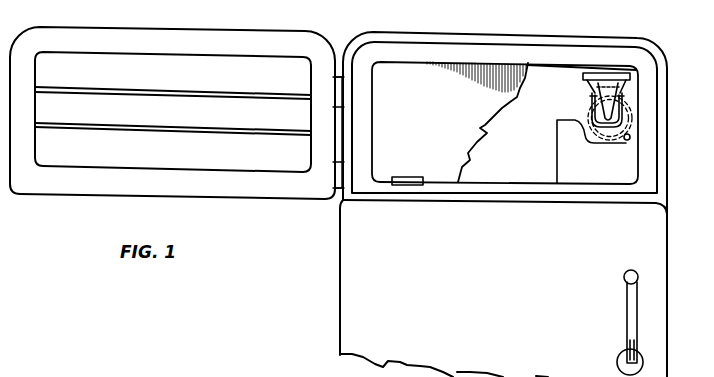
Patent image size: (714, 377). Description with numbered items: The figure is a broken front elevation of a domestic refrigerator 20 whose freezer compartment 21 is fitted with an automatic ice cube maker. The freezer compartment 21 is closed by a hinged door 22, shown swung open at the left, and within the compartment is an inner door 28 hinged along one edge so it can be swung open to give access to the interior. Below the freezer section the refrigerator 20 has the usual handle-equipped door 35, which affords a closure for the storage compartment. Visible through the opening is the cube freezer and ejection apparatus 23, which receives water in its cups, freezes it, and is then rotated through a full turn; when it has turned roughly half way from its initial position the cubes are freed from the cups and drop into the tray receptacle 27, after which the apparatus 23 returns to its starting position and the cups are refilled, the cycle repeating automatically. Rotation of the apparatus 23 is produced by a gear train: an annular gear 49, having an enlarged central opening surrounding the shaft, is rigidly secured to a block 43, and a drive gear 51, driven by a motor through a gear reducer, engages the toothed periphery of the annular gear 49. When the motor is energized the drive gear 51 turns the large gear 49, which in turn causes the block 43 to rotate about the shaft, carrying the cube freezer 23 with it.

The refrigerator 20 is at (369, 307).
The freezer compartment 21 is at (547, 75).
The hinged door 22 is at (40, 180).
The cube freezer and ejection apparatus 23 is at (608, 82).
The tray receptacle 27 is at (466, 124).
The inner door 28 is at (407, 77).
The handle-equipped door 35 is at (653, 320).
The block 43 is at (620, 115).
The annular gear 49 is at (593, 112).
The drive gear 51 is at (625, 142).